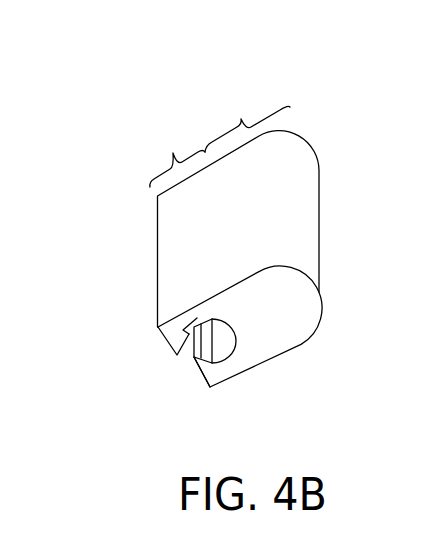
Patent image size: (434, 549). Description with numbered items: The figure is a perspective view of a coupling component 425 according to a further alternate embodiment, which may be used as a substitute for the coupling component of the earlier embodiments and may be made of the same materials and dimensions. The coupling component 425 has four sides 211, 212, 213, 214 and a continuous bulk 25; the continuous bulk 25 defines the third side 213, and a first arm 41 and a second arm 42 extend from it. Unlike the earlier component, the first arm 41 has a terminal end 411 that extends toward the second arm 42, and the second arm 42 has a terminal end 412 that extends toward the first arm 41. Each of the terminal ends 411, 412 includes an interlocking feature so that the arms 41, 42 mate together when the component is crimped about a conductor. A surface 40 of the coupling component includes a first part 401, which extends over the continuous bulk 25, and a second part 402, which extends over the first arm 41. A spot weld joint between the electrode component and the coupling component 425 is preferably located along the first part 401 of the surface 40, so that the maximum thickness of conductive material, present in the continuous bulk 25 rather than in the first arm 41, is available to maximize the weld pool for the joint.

The surface 40 is at (230, 231).
The continuous bulk 25 is at (305, 291).
The first arm 41 is at (196, 314).
The terminal end 411 is at (177, 349).
The terminal end 412 is at (200, 367).
The second arm 42 is at (232, 365).
The first part 401 is at (247, 122).
The second part 402 is at (177, 158).
The first side 211 is at (272, 334).
The second side 212 is at (214, 70).
The third side 213 is at (336, 184).
The fourth side 214 is at (134, 409).
The coupling component 425 is at (84, 316).